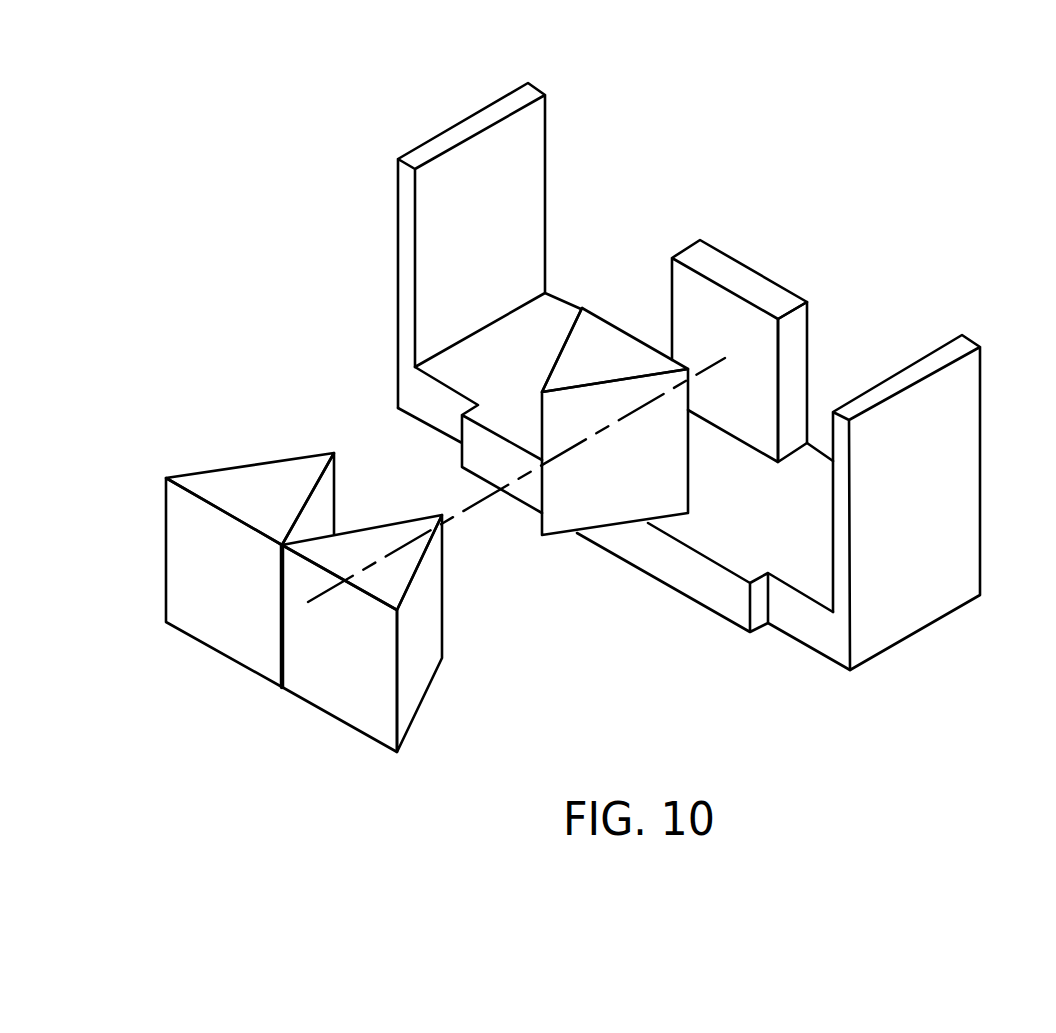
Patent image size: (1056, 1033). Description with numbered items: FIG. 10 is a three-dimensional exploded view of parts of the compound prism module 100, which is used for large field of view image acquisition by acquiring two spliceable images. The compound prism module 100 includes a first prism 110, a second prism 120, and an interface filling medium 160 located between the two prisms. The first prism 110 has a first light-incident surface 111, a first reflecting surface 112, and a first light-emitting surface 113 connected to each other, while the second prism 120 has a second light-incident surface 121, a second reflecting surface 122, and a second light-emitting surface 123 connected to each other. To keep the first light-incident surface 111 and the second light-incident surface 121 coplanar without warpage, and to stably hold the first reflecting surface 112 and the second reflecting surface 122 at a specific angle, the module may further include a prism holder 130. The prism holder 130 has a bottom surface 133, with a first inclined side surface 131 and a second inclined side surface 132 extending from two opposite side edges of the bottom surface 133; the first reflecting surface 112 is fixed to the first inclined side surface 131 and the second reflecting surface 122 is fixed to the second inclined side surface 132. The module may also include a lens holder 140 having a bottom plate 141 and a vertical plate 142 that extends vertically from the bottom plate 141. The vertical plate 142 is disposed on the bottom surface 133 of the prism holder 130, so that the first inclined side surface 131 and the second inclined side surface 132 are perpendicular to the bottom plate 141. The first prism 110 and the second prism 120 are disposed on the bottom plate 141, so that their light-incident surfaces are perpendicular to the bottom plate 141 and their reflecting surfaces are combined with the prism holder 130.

The compound prism module 100 is at (941, 154).
The first prism 110 is at (397, 575).
The first light-incident surface 111 is at (337, 663).
The first reflecting surface 112 is at (382, 520).
The first light-emitting surface 113 is at (423, 659).
The second prism 120 is at (235, 480).
The second light-incident surface 121 is at (214, 609).
The second reflecting surface 122 is at (321, 502).
The second light-emitting surface 123 is at (230, 465).
The prism holder 130 is at (610, 357).
The first inclined side surface 131 is at (627, 476).
The second inclined side surface 132 is at (553, 358).
The bottom surface 133 is at (627, 327).
The lens holder 140 is at (801, 287).
The bottom plate 141 is at (760, 555).
The vertical plate 142 is at (793, 360).
The interface filling medium 160 is at (282, 644).